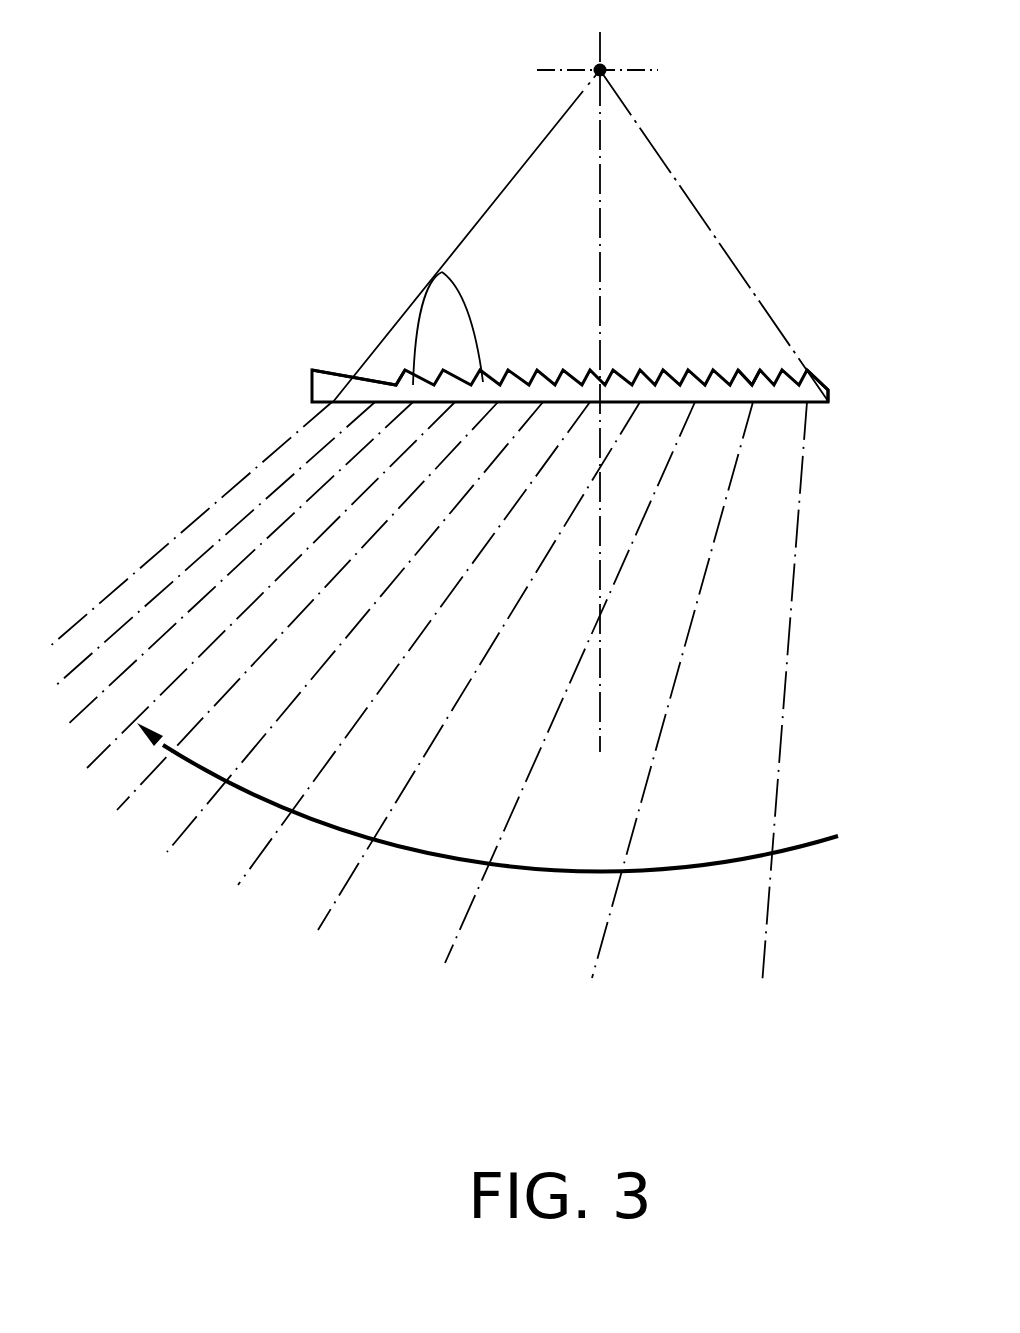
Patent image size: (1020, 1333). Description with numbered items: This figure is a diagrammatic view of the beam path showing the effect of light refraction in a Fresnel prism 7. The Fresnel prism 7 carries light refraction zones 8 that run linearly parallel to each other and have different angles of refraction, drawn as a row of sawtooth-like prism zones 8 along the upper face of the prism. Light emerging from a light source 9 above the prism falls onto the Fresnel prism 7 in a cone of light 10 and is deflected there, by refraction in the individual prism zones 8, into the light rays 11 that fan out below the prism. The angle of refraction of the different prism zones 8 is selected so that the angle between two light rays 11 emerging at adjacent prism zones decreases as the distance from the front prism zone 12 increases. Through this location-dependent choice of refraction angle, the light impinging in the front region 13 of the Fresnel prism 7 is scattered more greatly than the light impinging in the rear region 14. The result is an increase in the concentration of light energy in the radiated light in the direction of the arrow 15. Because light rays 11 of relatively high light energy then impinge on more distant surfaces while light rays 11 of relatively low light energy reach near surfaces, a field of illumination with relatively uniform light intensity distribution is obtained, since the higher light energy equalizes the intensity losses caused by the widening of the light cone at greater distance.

The Fresnel prism 7 is at (793, 394).
The light refraction zones 8 is at (442, 272).
The light source 9 is at (606, 64).
The cone of light 10 is at (683, 193).
The light rays 11 is at (228, 494).
The front prism zone 12 is at (827, 388).
The front region 13 is at (752, 340).
The rear region 14 is at (347, 325).
The arrow 15 is at (320, 824).